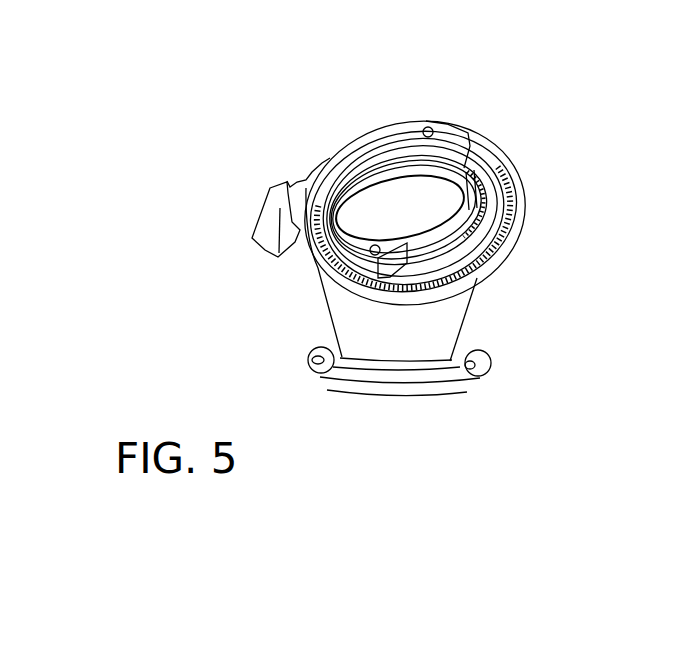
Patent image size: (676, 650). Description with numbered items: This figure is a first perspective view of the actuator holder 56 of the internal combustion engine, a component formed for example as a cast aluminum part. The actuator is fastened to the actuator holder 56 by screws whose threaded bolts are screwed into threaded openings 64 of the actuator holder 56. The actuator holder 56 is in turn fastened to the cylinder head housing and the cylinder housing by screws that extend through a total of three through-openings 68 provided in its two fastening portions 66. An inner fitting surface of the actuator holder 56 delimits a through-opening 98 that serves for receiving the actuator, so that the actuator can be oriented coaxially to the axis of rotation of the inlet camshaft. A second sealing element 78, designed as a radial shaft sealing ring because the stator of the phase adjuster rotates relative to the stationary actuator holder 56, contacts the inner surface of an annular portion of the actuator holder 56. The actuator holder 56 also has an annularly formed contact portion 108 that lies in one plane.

The actuator holder 56 is at (490, 183).
The threaded openings 64 is at (446, 118).
The fastening portions 66 is at (245, 265).
The through-openings 68 is at (497, 358).
The second sealing element 78 is at (465, 163).
The through-opening 98 is at (394, 190).
The contact portion 108 is at (530, 212).